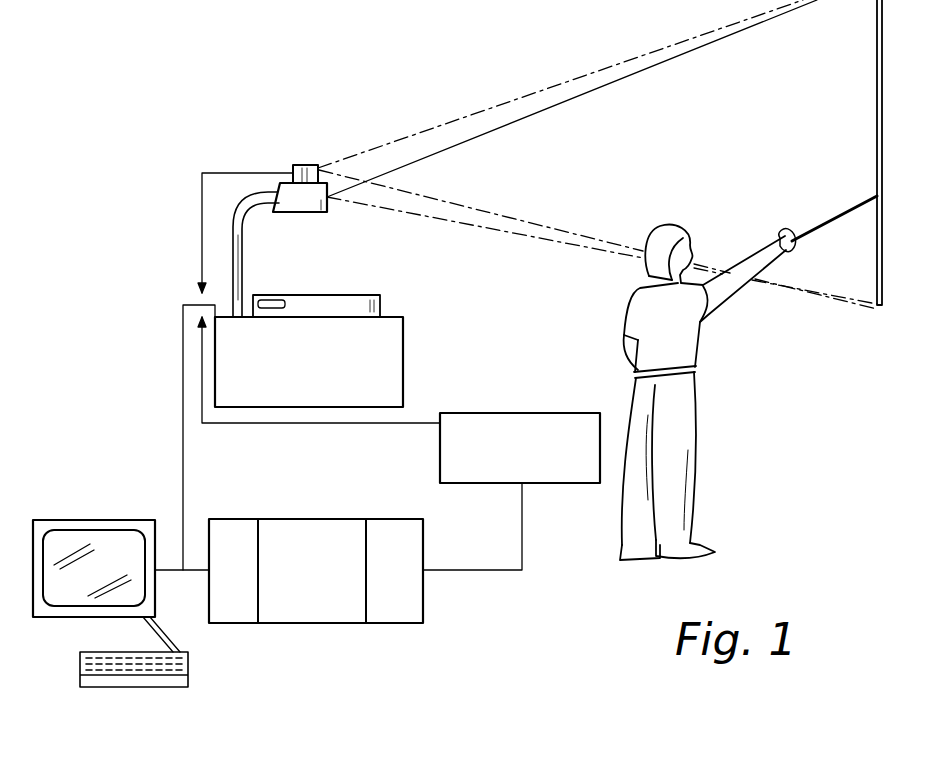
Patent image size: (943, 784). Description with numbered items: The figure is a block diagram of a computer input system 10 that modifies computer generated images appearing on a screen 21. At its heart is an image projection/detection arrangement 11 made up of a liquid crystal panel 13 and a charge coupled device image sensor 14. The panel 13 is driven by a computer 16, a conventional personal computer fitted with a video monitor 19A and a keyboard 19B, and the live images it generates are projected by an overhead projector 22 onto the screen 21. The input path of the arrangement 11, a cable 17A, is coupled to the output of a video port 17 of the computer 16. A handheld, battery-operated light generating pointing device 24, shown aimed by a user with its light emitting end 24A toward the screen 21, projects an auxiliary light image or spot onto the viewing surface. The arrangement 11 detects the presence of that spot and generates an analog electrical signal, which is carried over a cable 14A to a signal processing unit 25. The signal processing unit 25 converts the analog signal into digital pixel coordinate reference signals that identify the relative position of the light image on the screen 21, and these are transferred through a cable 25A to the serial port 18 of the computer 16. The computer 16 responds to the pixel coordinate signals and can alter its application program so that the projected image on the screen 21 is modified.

The computer input system 10 is at (128, 82).
The image projection/detection arrangement 11 is at (474, 293).
The liquid crystal panel 13 is at (395, 276).
The charge coupled device image sensor 14 is at (300, 170).
The cable 14A is at (202, 247).
The computer 16 is at (325, 612).
The video port 17 is at (250, 624).
The cable 17A is at (186, 472).
The serial port 18 is at (400, 624).
The video monitor 19A is at (97, 520).
The keyboard 19B is at (78, 680).
The screen 21 is at (881, 306).
The overhead projector 22 is at (405, 357).
The light generating pointing device 24 is at (828, 216).
The pointer tip 24A is at (790, 232).
The signal processing unit 25 is at (440, 447).
The cable 25A is at (495, 572).